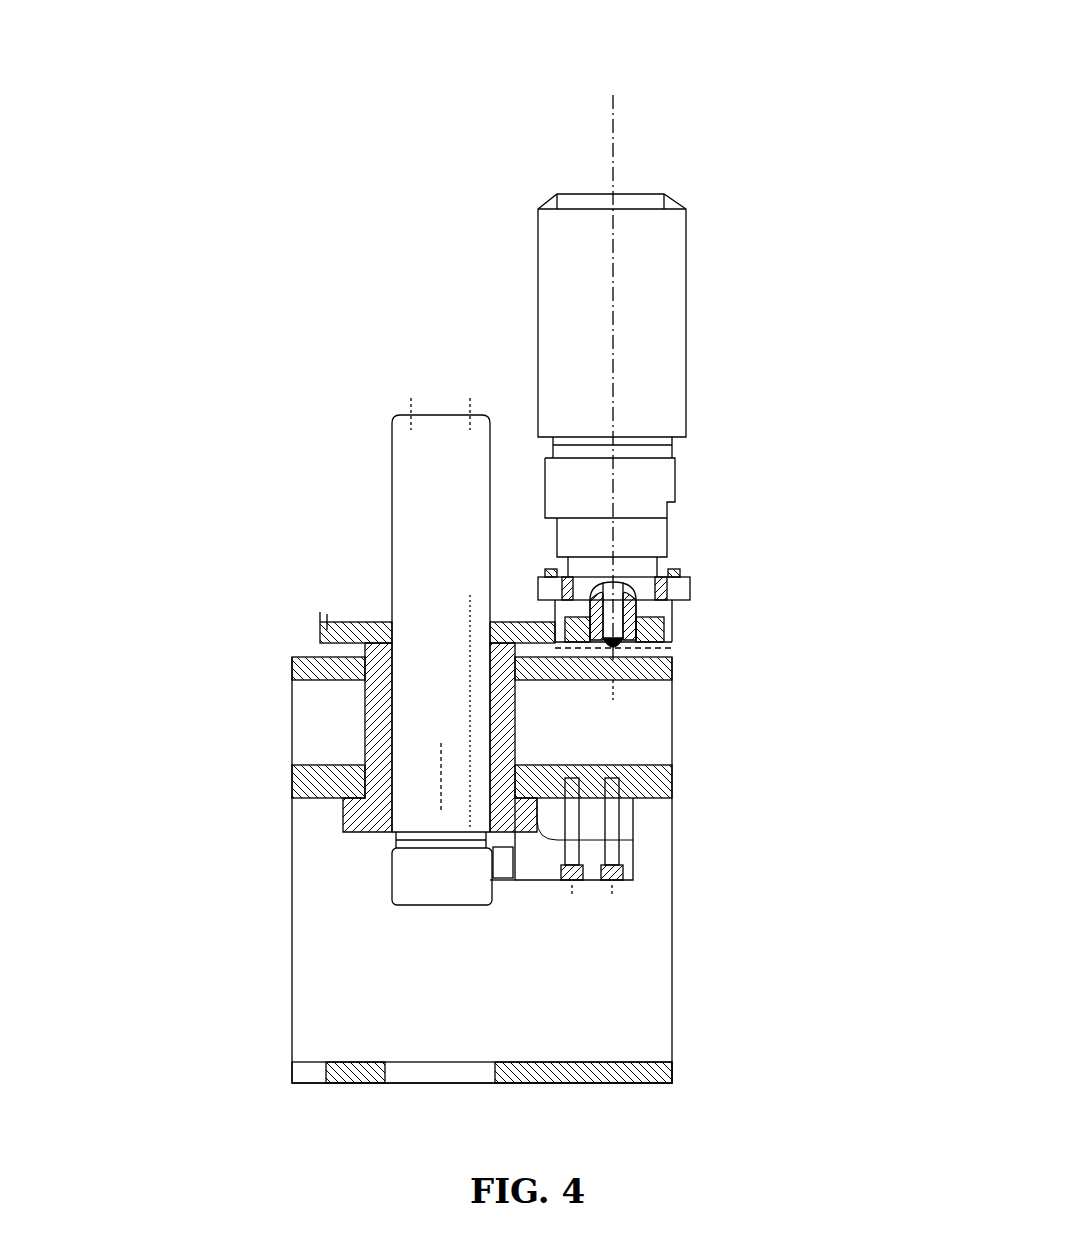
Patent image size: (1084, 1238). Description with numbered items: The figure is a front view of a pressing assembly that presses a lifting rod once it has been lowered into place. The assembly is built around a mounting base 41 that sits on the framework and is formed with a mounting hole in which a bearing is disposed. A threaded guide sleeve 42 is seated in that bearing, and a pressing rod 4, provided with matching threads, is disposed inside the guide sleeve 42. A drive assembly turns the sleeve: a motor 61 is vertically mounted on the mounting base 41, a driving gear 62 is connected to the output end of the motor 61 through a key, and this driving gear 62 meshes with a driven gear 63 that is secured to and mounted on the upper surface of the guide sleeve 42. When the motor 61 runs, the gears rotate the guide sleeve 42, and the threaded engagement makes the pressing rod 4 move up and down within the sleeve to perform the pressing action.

The pressing rod 4 is at (50, 570).
The mounting base 41 is at (948, 1092).
The guide sleeve 42 is at (50, 815).
The motor 61 is at (948, 392).
The driving gear 62 is at (948, 684).
The driven gear 63 is at (948, 885).